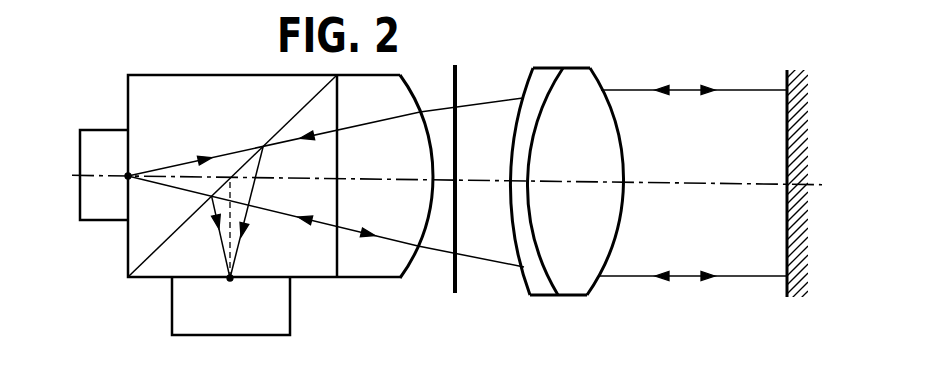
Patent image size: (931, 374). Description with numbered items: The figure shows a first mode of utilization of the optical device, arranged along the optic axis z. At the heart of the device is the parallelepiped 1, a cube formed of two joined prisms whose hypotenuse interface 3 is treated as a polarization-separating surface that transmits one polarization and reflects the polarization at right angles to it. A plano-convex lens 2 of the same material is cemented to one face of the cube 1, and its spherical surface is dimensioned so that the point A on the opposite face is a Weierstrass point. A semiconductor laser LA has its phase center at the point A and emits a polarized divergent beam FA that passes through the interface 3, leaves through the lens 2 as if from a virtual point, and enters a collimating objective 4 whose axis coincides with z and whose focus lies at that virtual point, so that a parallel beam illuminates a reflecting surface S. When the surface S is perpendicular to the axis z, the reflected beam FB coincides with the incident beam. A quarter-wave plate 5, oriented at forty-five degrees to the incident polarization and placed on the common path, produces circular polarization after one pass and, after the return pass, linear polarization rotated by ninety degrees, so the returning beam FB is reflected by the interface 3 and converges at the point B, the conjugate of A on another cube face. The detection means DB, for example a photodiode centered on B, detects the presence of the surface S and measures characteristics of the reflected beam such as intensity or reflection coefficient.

The parallelepiped 1 is at (158, 268).
The plano-convex lens 2 is at (381, 268).
The interface 3 is at (144, 259).
The collimating objective 4 is at (577, 275).
The quarter-wave plate 5 is at (456, 276).
The semiconductor laser LA is at (65, 93).
The detection means DB is at (277, 318).
The reflecting surface S is at (788, 278).
The point A is at (128, 174).
The point B is at (230, 279).
The forward light beam FA is at (192, 175).
The returning light beam FB is at (235, 218).
The optic axis z is at (447, 191).